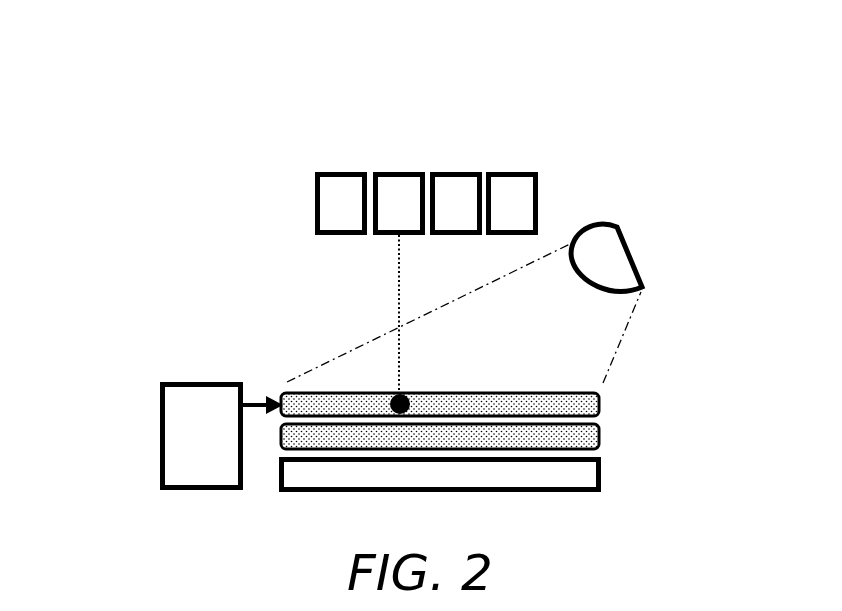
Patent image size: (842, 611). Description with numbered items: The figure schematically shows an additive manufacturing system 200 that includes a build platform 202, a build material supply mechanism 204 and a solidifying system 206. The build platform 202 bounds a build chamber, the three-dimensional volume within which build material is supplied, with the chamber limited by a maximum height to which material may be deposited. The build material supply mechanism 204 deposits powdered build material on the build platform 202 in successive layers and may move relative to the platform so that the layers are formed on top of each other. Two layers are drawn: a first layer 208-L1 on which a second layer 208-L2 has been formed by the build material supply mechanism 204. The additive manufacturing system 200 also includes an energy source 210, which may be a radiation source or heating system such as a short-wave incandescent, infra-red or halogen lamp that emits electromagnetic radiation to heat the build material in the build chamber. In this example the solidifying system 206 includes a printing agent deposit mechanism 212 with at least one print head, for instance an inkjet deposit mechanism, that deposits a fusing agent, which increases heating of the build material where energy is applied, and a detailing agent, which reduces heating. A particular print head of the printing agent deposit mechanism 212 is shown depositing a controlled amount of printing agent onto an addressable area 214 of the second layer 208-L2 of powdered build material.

The additive manufacturing system 200 is at (184, 168).
The build platform 202 is at (600, 491).
The build material supply mechanism 204 is at (179, 439).
The solidifying system 206 is at (482, 112).
The first layer 208-L1 is at (600, 437).
The second layer 208-L2 is at (600, 404).
The energy source 210 is at (634, 254).
The printing agent deposit mechanism 212 is at (330, 172).
The addressable area 214 is at (408, 392).